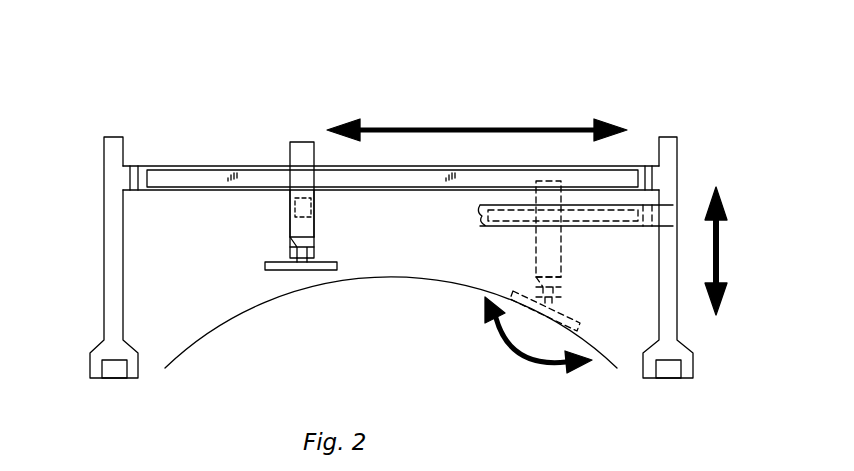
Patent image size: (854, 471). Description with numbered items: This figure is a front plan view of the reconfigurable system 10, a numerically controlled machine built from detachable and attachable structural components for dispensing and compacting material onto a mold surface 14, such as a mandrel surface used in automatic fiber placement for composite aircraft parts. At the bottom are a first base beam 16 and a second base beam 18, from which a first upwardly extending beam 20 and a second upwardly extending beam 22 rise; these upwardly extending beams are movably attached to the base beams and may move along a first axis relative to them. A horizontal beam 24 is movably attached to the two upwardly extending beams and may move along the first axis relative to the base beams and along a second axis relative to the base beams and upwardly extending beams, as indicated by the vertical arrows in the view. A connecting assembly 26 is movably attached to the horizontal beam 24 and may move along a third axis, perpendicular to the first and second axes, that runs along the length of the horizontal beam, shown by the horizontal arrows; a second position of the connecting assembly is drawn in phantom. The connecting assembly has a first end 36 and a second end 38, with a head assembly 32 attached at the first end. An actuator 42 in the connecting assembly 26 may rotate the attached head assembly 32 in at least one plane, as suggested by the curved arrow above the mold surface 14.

The reconfigurable system 10 is at (718, 84).
The mold surface 14 is at (224, 322).
The first base beam 16 is at (113, 372).
The second base beam 18 is at (672, 372).
The first upwardly extending beam 20 is at (110, 268).
The second upwardly extending beam 22 is at (660, 265).
The horizontal beam 24 is at (168, 178).
The connecting assembly 26 is at (307, 228).
The head assembly 32 is at (330, 267).
The first end 36 is at (292, 255).
The second end 38 is at (302, 142).
The actuator 42 is at (293, 203).